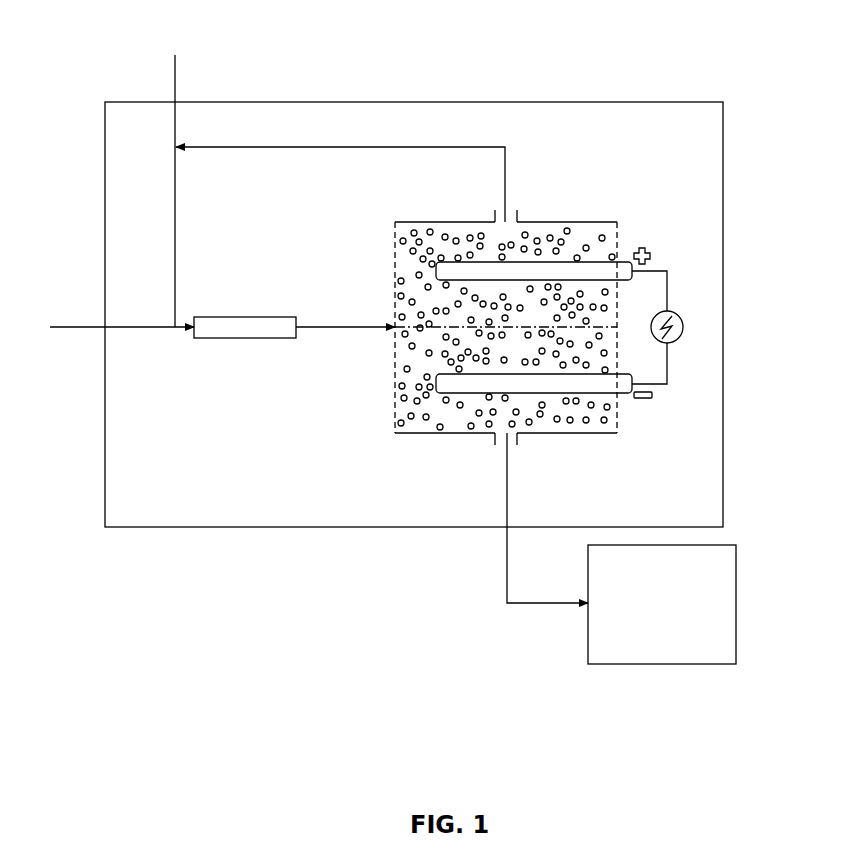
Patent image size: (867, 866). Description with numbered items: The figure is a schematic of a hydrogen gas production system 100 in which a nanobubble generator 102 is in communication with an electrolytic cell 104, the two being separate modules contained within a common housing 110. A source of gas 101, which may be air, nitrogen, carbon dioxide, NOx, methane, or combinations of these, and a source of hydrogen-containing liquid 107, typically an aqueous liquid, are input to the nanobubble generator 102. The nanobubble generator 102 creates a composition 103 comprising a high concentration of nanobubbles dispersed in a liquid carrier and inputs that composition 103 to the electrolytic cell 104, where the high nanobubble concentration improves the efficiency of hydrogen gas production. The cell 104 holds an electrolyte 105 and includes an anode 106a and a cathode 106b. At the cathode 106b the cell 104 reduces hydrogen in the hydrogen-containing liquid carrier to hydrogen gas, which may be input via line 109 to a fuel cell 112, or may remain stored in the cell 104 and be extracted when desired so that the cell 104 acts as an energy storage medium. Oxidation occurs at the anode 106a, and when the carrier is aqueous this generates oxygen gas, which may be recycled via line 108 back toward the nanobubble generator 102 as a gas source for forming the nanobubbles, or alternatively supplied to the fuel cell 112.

The hydrogen gas production system 100 is at (600, 717).
The source of gas 101 is at (172, 73).
The nanobubble generator 102 is at (247, 340).
The composition 103 is at (345, 312).
The electrolytic cell 104 is at (575, 210).
The electrolyte 105 is at (525, 362).
The anode 106a is at (457, 262).
The cathode 106b is at (457, 393).
The source of hydrogen-containing liquid 107 is at (122, 329).
The line 108 is at (507, 182).
The line 109 is at (507, 565).
The common housing 110 is at (250, 527).
The fuel cell 112 is at (678, 618).